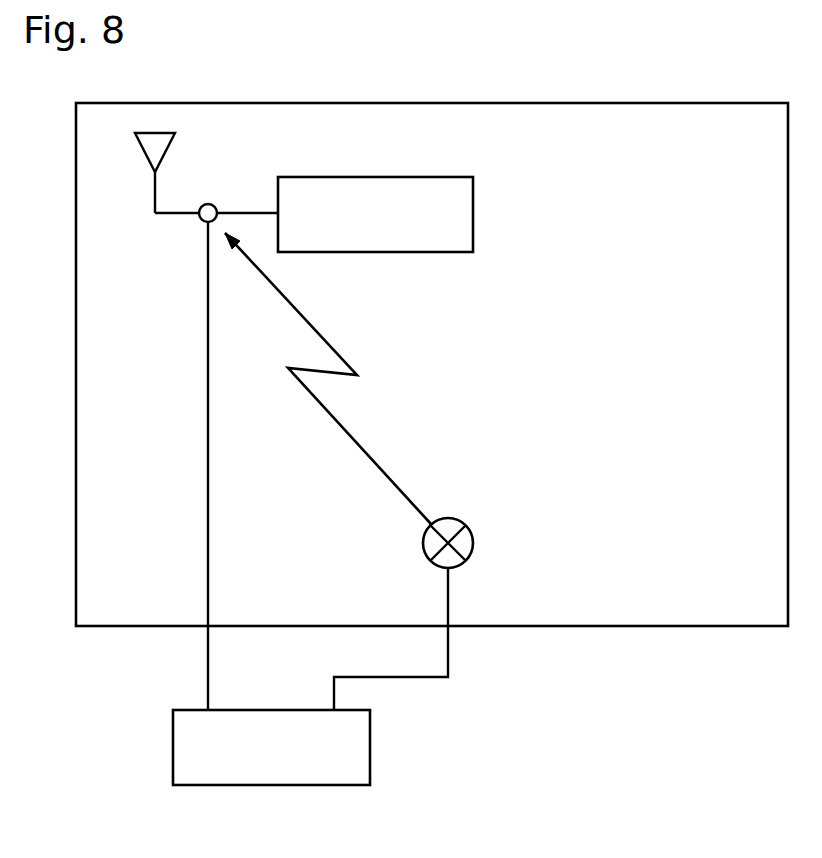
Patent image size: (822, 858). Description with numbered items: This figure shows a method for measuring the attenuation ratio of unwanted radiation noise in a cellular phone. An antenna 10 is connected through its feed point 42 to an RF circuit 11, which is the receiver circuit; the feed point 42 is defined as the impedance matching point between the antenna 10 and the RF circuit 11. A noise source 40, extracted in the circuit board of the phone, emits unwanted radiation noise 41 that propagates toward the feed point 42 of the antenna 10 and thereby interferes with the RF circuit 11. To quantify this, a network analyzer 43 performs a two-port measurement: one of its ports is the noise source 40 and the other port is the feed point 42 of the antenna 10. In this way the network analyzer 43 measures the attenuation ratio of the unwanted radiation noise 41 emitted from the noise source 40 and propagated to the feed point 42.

The antenna 10 is at (143, 150).
The RF circuit 11 is at (408, 177).
The noise source 40 is at (473, 538).
The unwanted radiation noise 41 is at (385, 458).
The feed point 42 is at (209, 203).
The network analyzer 43 is at (275, 785).